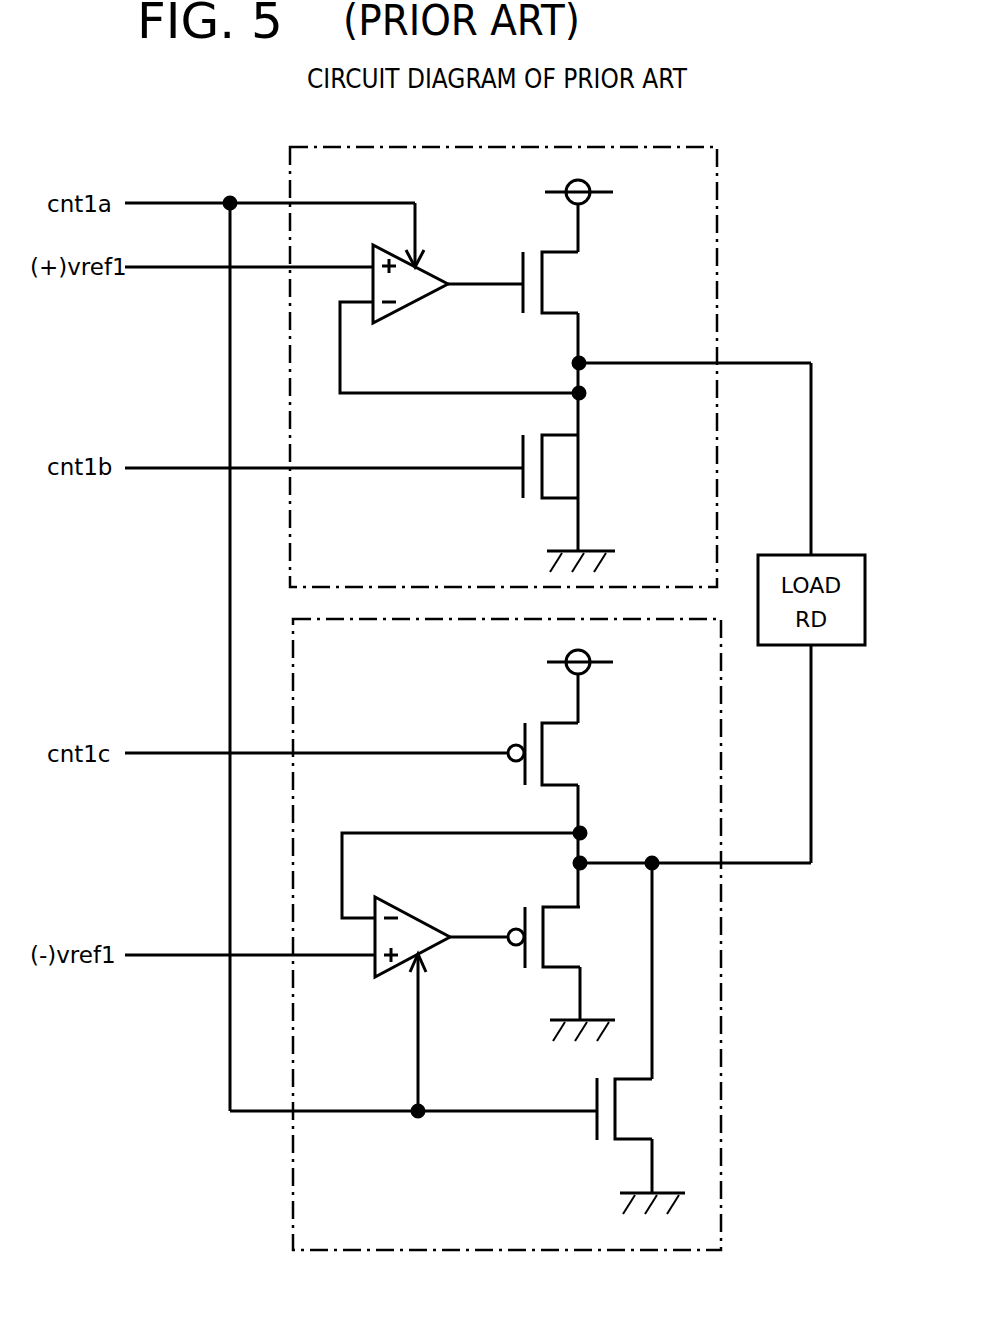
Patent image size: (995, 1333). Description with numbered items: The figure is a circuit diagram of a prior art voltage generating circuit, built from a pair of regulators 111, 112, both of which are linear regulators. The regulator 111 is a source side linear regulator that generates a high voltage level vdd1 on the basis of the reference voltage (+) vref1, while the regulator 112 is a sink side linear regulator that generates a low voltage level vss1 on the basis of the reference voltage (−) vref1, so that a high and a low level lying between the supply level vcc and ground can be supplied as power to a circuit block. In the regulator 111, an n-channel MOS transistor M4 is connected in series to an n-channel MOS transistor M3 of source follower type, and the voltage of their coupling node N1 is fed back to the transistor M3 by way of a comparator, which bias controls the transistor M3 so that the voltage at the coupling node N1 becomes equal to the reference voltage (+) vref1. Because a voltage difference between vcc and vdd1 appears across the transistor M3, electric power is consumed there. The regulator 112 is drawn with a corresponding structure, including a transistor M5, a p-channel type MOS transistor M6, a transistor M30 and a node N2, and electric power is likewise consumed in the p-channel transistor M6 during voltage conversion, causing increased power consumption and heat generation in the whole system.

The regulator 111 is at (717, 172).
The regulator 112 is at (721, 1162).
The n-channel MOS transistor M3 is at (560, 282).
The n-channel MOS transistor M4 is at (560, 466).
The transistor M5 is at (552, 754).
The p-channel type MOS transistor M6 is at (554, 937).
The transistor M30 is at (458, 1109).
The coupling node N1 is at (585, 357).
The node N2 is at (585, 857).